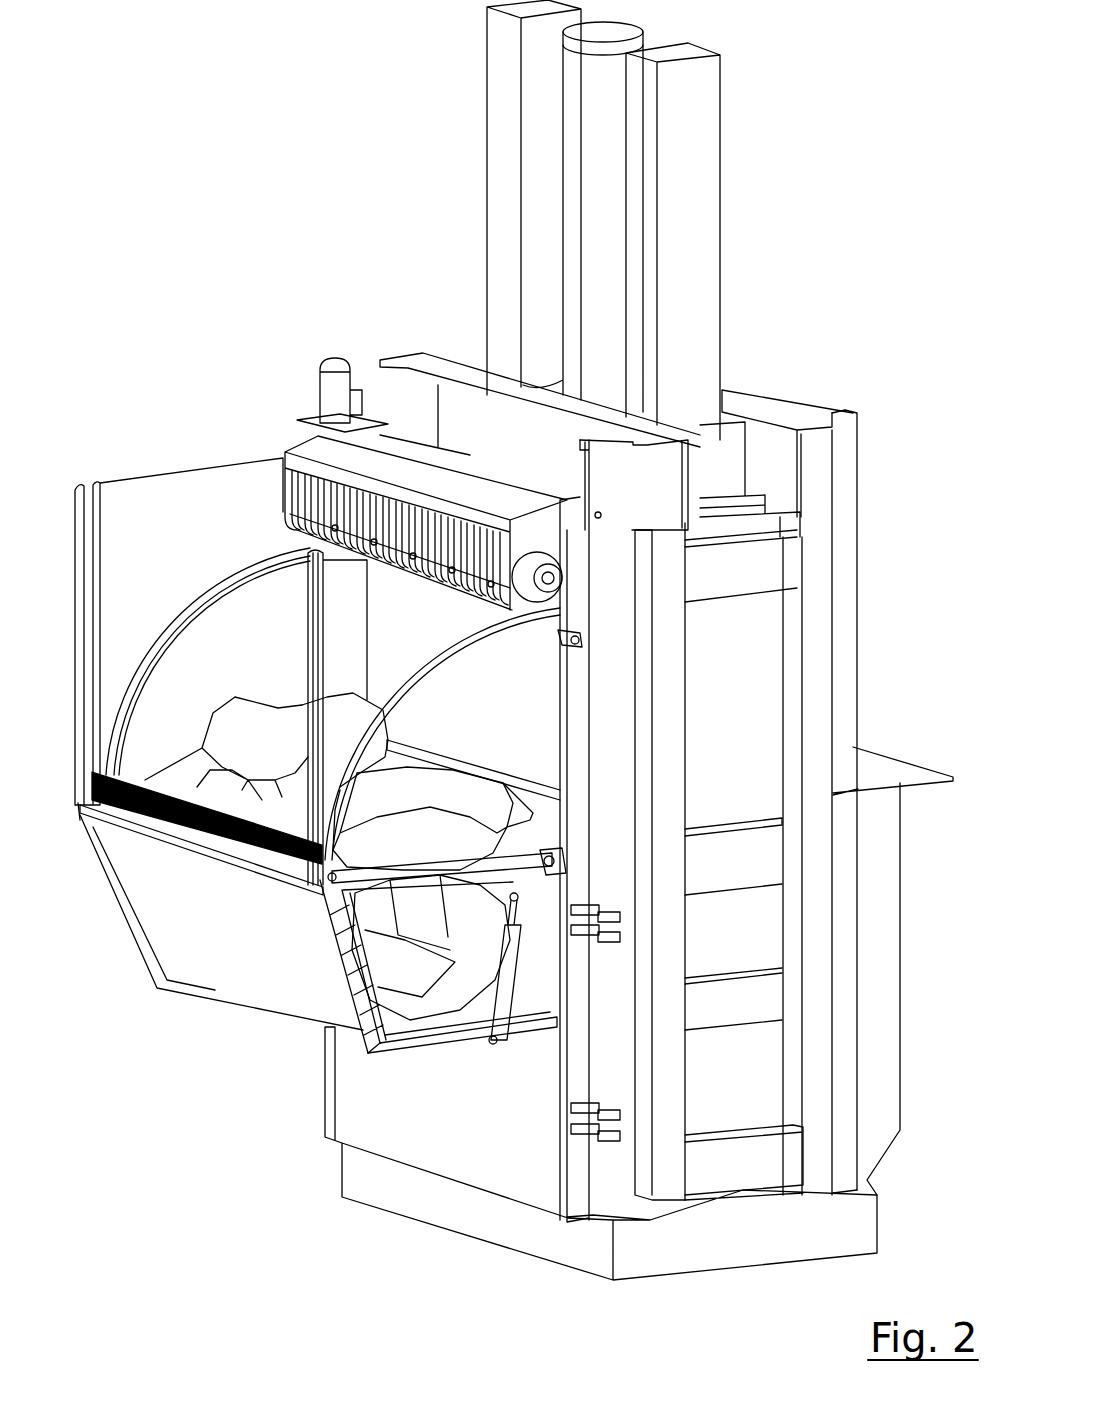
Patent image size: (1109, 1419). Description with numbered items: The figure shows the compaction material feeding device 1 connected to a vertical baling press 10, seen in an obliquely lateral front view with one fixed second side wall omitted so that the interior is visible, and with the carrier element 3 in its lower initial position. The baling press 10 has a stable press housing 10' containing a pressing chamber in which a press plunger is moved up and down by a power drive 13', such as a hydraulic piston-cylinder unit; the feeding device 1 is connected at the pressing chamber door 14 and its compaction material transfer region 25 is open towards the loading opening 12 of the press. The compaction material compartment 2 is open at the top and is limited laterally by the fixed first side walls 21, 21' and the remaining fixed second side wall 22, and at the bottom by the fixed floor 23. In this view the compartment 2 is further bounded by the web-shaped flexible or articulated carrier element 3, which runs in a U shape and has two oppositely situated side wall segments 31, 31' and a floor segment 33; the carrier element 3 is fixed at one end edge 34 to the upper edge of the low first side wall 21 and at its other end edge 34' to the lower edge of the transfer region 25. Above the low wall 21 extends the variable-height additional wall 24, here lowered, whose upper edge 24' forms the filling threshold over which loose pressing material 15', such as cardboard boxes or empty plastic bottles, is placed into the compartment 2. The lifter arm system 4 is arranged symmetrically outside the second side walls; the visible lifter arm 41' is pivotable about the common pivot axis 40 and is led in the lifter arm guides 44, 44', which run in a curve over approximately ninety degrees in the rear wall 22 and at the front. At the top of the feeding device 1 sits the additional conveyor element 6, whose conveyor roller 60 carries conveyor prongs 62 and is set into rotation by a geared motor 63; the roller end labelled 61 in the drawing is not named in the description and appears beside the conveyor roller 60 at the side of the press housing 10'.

The compaction material feeding device 1 is at (158, 1038).
The compaction material compartment 2 is at (225, 668).
The carrier element 3 is at (400, 1027).
The lifter arm system 4 is at (403, 865).
The additional conveyor element 6 is at (390, 572).
The baling press 10 is at (655, 727).
The press housing 10' is at (864, 971).
The loading opening 12 is at (395, 630).
The power drive 13' is at (562, 220).
The pressing chamber door 14 is at (453, 1103).
The loose pressing material 15' is at (226, 740).
The first side wall 21 is at (221, 950).
The first side wall 21' is at (524, 996).
The second side wall 22 is at (203, 535).
The floor 23 is at (457, 1023).
The additional wall 24 is at (201, 868).
The upper edge 24' is at (310, 741).
The compaction material transfer region 25 is at (565, 762).
The side wall segment 31 is at (306, 966).
The side wall segment 31' is at (408, 871).
The floor segment 33 is at (445, 1030).
The end edge 34 is at (207, 851).
The end edge 34' is at (446, 773).
The pivot axis 40 is at (565, 880).
The lifter arm 41' is at (431, 947).
The lifter arm guide 44 is at (208, 625).
The lifter arm guide 44' is at (442, 734).
The conveyor roller 60 is at (540, 550).
The rotor bearing 61 is at (553, 580).
The conveyor prongs 62 is at (427, 560).
The geared motor 63 is at (323, 410).